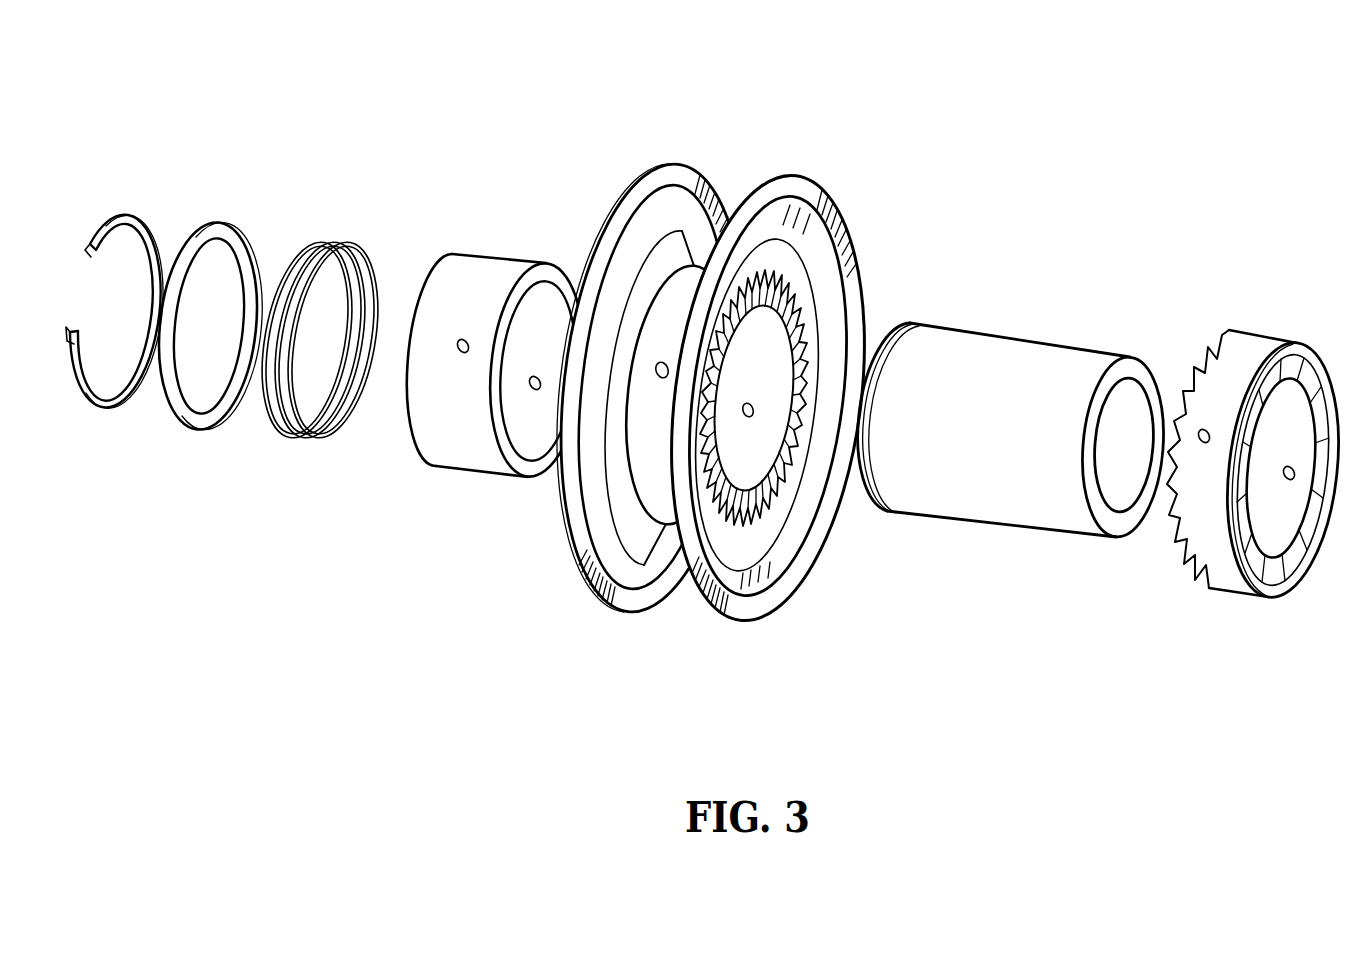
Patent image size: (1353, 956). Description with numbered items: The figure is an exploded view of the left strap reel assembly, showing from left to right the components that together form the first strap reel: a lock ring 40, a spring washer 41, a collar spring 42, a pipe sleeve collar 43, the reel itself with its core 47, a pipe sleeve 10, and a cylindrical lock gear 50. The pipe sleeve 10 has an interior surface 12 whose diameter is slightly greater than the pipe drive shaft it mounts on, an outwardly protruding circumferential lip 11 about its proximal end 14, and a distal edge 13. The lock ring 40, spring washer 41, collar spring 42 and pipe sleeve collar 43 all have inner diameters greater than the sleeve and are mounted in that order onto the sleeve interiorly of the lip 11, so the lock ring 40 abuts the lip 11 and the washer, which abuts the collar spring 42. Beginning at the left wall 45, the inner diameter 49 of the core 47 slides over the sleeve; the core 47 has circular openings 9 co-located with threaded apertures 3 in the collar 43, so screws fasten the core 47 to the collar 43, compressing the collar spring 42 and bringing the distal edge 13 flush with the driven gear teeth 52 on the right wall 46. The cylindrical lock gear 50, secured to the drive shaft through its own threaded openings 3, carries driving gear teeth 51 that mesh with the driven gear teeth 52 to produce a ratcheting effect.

The threaded apertures 3 is at (458, 352).
The circular openings 9 is at (663, 362).
The pipe sleeve 10 is at (1082, 337).
The circumferential lip 11 is at (1077, 345).
The proximal end 14 is at (994, 430).
The interior surface 12 is at (1120, 497).
The distal edge 13 is at (1092, 482).
The lock ring 40 is at (140, 223).
The spring washer 41 is at (215, 226).
The collar spring 42 is at (277, 420).
The pipe sleeve collar 43 is at (498, 280).
The left wall 45 is at (665, 162).
The right wall 46 is at (847, 247).
The core 47 is at (643, 458).
The inner diameter 49 is at (747, 448).
The cylindrical lock gear 50 is at (1247, 330).
The driving gear teeth 51 is at (1192, 370).
The driven gear teeth 52 is at (752, 497).